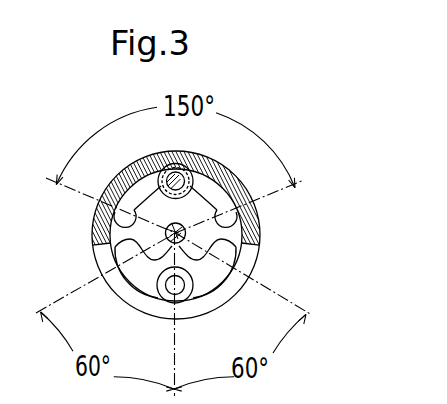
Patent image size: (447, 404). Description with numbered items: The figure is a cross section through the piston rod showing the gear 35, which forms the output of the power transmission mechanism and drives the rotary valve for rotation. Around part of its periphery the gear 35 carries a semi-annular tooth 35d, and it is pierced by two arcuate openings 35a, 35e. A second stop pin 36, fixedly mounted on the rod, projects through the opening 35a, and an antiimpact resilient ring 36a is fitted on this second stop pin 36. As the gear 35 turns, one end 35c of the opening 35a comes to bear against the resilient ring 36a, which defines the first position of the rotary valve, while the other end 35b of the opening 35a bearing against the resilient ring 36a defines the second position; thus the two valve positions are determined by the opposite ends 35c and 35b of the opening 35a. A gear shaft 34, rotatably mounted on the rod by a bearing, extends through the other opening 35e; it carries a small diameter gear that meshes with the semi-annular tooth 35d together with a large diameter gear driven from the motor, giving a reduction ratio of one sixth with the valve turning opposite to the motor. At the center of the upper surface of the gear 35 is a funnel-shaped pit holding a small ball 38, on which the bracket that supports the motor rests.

The gear shaft 34 is at (181, 176).
The small ball 38 is at (126, 179).
The gear 35 is at (100, 243).
The arcuate opening 35a is at (148, 276).
The other end of the opening 35b is at (116, 251).
The one end of the opening 35c is at (228, 262).
The semi-annular tooth 35d is at (241, 211).
The arcuate opening 35e is at (136, 196).
The second stop pin 36 is at (188, 294).
The antiimpact resilient ring 36a is at (162, 301).